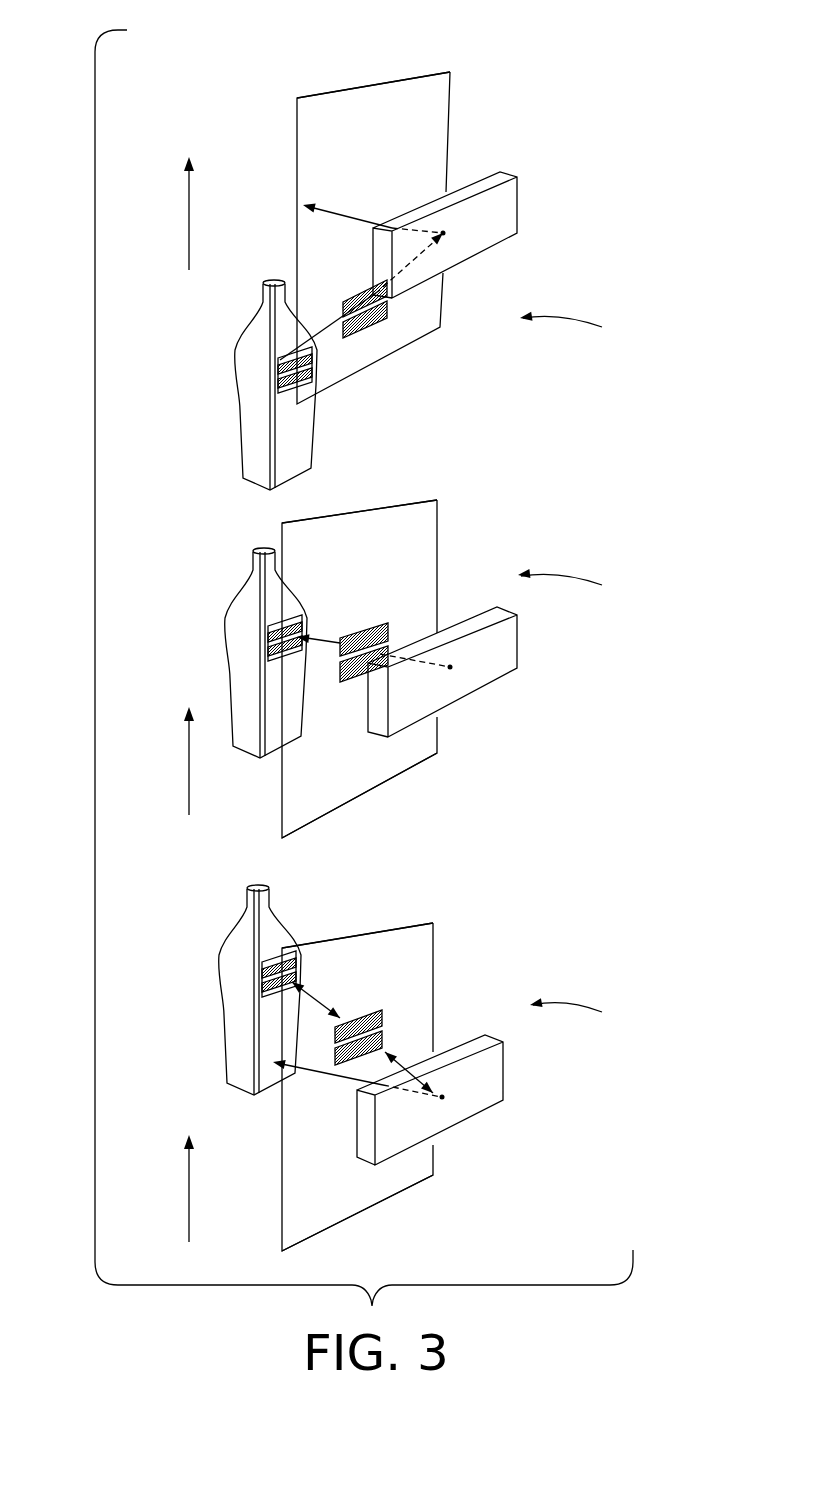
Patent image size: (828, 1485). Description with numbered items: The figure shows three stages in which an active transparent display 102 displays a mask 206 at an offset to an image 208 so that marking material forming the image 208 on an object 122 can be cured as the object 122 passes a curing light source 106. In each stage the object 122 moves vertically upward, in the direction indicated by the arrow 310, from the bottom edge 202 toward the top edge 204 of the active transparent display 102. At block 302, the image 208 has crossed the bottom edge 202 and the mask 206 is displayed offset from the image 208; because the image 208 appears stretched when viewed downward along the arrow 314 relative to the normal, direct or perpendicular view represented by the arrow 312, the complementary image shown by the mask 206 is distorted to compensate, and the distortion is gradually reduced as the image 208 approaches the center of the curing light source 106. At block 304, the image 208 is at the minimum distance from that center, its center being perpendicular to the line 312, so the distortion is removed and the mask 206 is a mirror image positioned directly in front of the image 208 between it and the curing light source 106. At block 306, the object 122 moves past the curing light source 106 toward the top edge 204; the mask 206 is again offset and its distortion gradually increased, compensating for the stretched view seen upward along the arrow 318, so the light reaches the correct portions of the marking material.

The active transparent display 102 is at (416, 76).
The top edge 204 is at (362, 86).
The bottom edge 202 is at (367, 778).
The object 122 is at (240, 323).
The image 208 is at (277, 381).
The mask 206 is at (368, 323).
The curing light source 106 is at (510, 228).
The direction of movement 310 is at (187, 218).
The arrow 312 is at (333, 211).
The arrow 314 is at (328, 338).
The arrow 318 is at (328, 1003).
The block 302 is at (583, 332).
The block 304 is at (582, 589).
The block 306 is at (588, 1017).